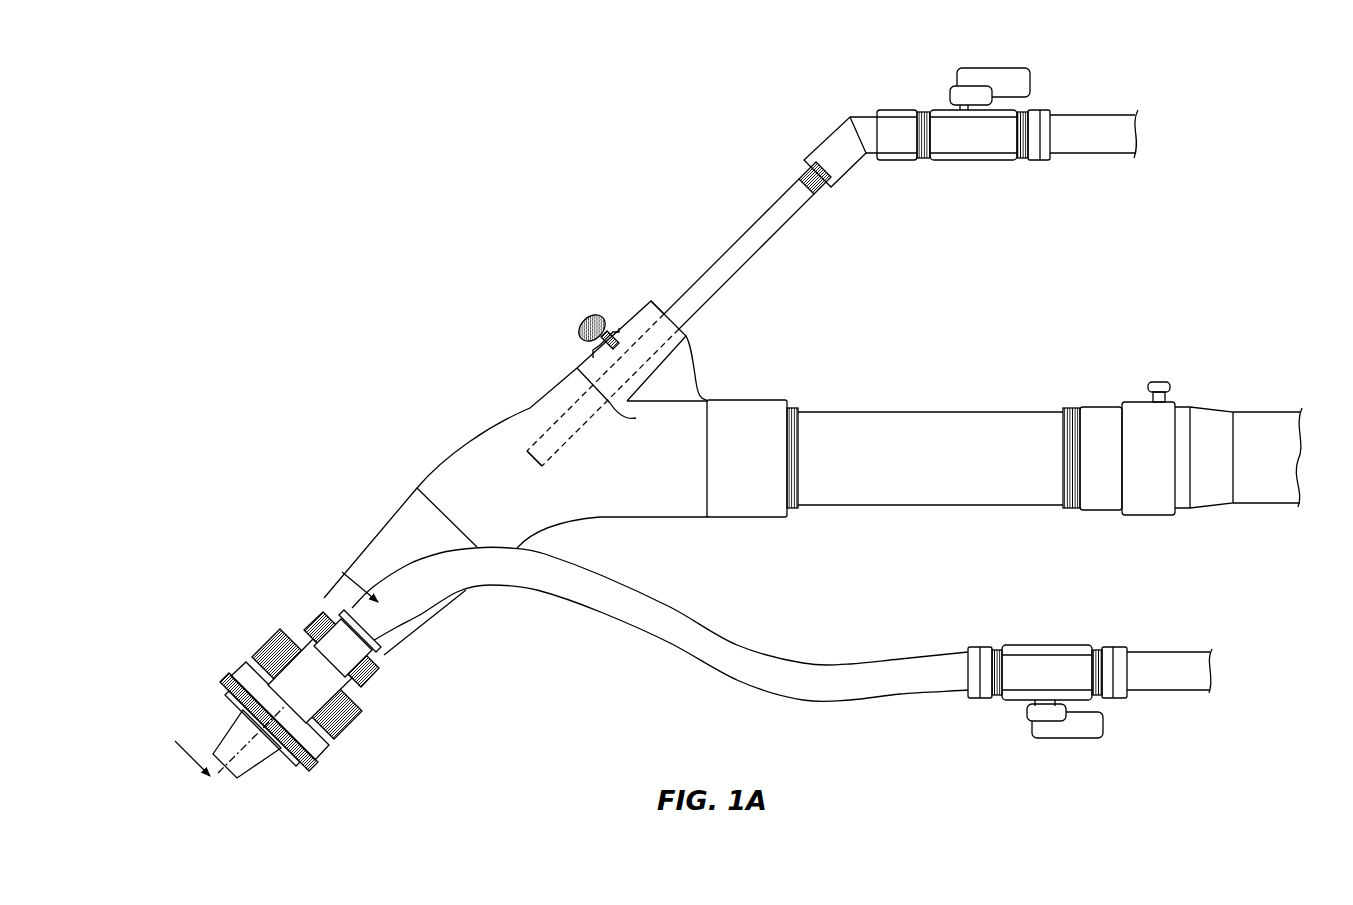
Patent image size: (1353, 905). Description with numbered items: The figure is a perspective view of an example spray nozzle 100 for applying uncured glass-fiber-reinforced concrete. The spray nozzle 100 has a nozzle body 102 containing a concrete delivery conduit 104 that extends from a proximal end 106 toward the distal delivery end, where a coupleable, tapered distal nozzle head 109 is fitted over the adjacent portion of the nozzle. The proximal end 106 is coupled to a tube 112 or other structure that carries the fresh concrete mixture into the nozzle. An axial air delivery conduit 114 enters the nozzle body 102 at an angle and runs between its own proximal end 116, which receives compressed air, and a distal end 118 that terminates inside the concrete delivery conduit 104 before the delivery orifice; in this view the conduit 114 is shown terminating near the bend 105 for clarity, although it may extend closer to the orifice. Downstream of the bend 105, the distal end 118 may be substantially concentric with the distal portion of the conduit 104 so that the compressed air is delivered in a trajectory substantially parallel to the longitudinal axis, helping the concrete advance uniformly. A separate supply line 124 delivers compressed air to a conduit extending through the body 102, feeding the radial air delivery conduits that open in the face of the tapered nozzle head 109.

The spray nozzle 100 is at (303, 413).
The nozzle body 102 is at (300, 630).
The concrete delivery conduit 104 is at (448, 477).
The bend 105 is at (556, 535).
The proximal end 106 is at (988, 380).
The distal nozzle head 109 is at (228, 742).
The tube 112 is at (1265, 425).
The axial air delivery conduit 114 is at (726, 252).
The proximal end 116 is at (806, 115).
The distal end 118 is at (521, 441).
The supply line 124 is at (862, 680).